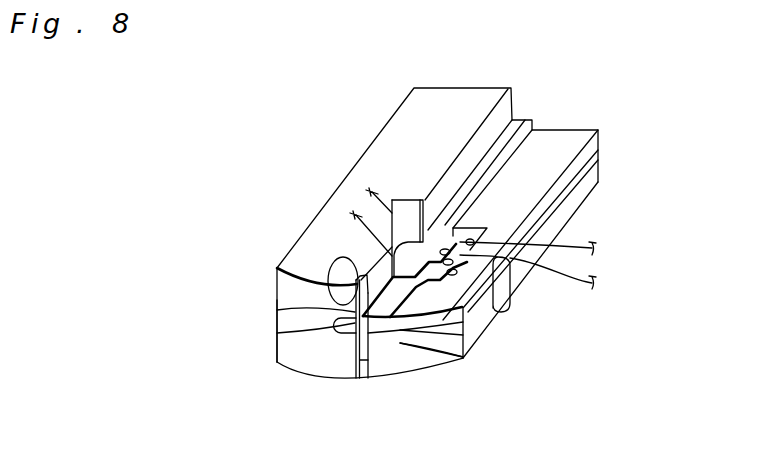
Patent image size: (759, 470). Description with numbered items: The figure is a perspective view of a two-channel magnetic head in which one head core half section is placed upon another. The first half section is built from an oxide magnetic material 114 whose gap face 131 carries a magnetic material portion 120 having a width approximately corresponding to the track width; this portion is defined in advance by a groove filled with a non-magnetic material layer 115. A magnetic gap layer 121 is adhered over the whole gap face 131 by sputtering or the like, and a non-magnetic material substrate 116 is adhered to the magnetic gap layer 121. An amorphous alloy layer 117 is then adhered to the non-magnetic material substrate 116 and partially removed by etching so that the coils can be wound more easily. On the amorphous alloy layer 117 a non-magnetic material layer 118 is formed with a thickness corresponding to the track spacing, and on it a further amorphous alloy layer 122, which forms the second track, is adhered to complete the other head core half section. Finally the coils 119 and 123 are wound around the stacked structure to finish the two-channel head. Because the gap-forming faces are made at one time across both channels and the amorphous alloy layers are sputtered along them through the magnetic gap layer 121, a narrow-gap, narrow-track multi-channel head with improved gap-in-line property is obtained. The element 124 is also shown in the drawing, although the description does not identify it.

The oxide magnetic material 114 is at (295, 350).
The non-magnetic material layer 115 is at (330, 290).
The non-magnetic material substrate 116 is at (427, 358).
The amorphous alloy layer 117 is at (437, 333).
The non-magnetic material layer 118 is at (460, 318).
The coil 119 is at (483, 325).
The magnetic material portion 120 is at (277, 310).
The magnetic gap layer 121 is at (363, 358).
The amorphous alloy layer 122 is at (473, 182).
The coil 123 is at (383, 207).
The lower block 124 is at (270, 373).
The gap face 131 is at (477, 94).